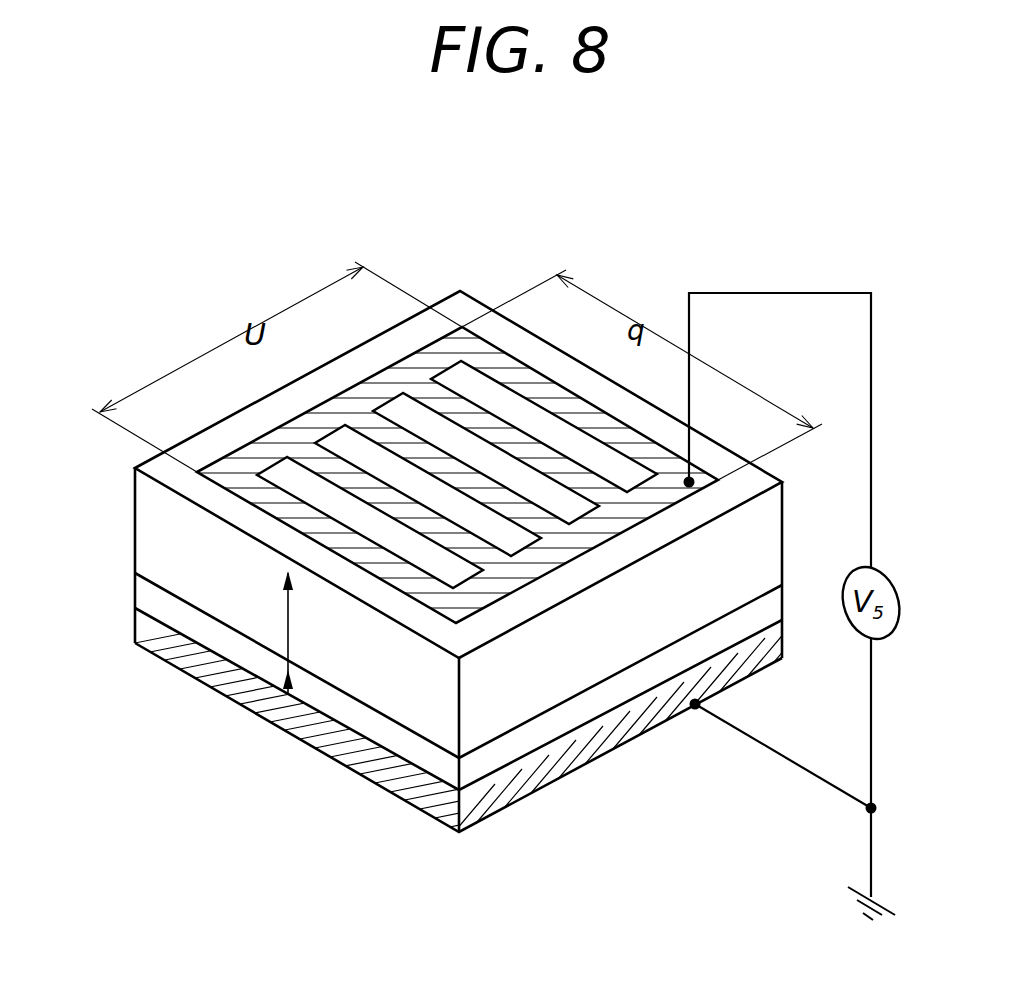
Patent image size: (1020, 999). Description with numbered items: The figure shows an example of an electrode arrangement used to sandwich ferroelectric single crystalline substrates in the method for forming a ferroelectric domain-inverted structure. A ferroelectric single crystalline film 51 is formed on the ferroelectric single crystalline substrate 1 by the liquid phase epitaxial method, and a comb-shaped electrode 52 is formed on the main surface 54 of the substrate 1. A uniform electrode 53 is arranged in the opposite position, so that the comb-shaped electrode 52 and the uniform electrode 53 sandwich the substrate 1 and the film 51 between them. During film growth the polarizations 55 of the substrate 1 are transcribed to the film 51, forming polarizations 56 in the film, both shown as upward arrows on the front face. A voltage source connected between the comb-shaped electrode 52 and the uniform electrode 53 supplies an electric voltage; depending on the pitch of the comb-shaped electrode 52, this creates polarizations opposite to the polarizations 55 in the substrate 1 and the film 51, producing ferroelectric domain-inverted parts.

The ferroelectric single crystalline substrate 1 is at (145, 530).
The ferroelectric single crystalline film 51 is at (147, 598).
The comb-shaped electrode 52 is at (473, 350).
The uniform electrode 53 is at (196, 655).
The main surface 54 is at (645, 418).
The polarizations of the substrate 55 is at (292, 627).
The polarizations of the film 56 is at (276, 690).